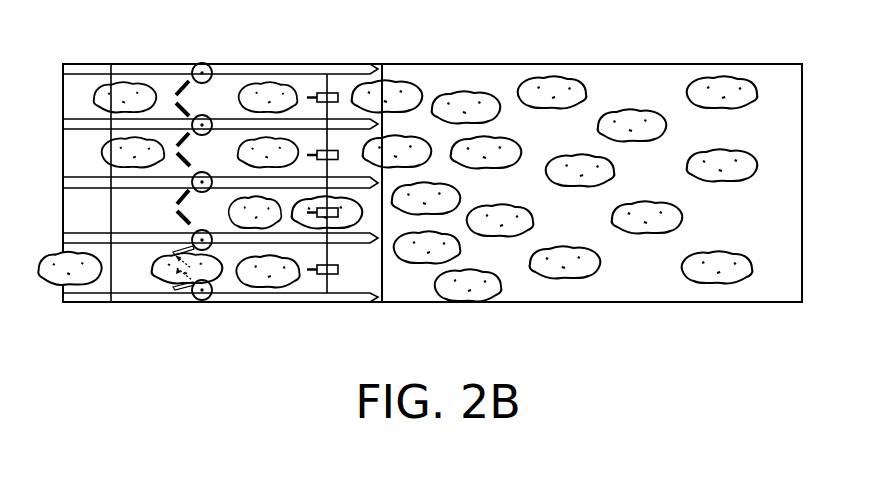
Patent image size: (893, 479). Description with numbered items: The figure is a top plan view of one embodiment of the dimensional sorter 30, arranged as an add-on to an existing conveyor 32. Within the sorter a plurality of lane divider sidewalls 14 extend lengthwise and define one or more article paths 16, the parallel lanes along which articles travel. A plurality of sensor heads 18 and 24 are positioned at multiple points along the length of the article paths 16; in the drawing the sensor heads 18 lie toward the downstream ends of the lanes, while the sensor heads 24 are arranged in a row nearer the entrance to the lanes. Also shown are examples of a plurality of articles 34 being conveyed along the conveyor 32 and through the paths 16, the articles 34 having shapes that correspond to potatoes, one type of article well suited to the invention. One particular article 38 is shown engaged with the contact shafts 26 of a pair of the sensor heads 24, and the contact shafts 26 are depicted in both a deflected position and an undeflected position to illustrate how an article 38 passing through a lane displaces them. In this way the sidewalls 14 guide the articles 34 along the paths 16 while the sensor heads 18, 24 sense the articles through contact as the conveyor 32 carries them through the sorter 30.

The lane divider sidewalls 14 is at (304, 119).
The article paths 16 is at (227, 149).
The sensor heads 18 is at (338, 212).
The sensor heads 24 is at (220, 283).
The contact shafts 26 is at (174, 250).
The dimensional sorter 30 is at (275, 330).
The conveyor 32 is at (661, 295).
The articles 34 is at (752, 265).
The article 38 is at (150, 282).